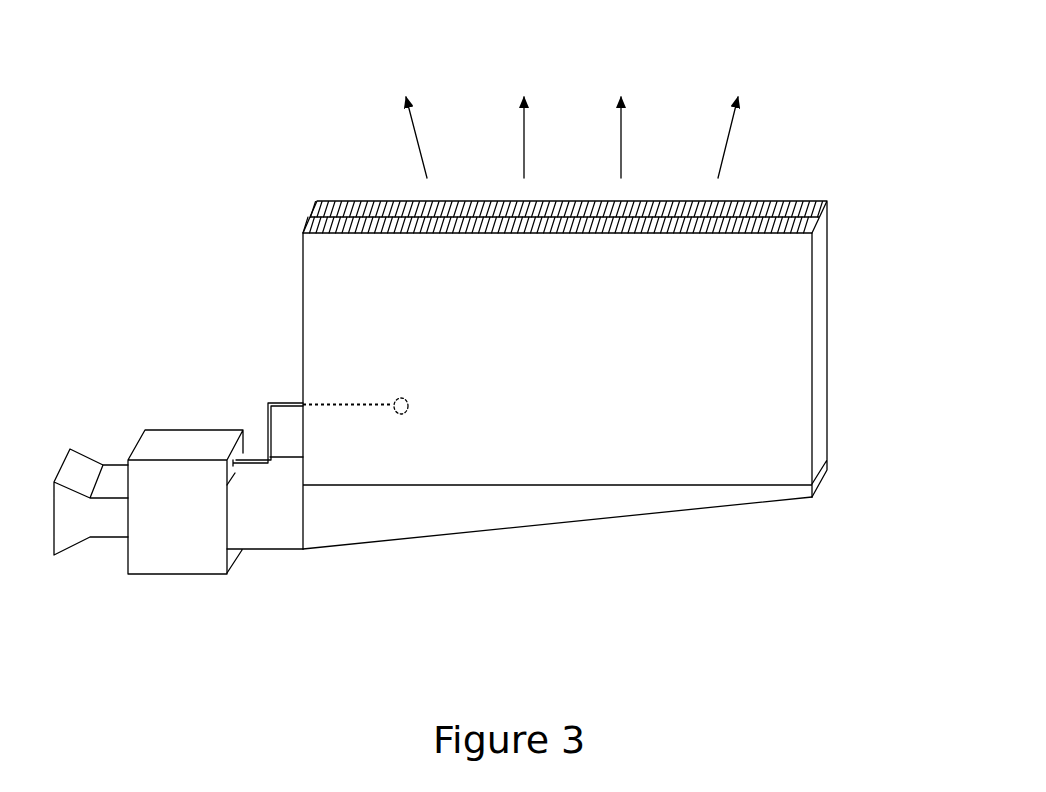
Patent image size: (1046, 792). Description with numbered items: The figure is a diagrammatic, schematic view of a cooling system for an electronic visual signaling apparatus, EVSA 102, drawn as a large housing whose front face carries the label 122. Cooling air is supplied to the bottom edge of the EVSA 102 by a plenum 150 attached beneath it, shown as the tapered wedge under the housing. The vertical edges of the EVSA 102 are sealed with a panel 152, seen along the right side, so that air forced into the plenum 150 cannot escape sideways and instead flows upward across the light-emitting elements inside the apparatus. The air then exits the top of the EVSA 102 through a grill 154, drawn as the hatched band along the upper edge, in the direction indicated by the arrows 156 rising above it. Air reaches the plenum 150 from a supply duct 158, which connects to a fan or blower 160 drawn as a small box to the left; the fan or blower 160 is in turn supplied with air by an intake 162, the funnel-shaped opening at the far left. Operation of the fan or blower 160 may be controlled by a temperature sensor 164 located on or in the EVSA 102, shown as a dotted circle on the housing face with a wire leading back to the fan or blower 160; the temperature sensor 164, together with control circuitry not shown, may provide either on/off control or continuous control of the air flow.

The EVSA 102 is at (867, 209).
The housing / catalyst chamber 122 is at (587, 358).
The plenum 150 is at (447, 508).
The panel 152 is at (827, 317).
The grill 154 is at (678, 207).
The arrows 156 is at (417, 128).
The supply duct 158 is at (263, 535).
The fan or blower 160 is at (186, 443).
The intake 162 is at (70, 535).
The temperature sensor 164 is at (400, 398).